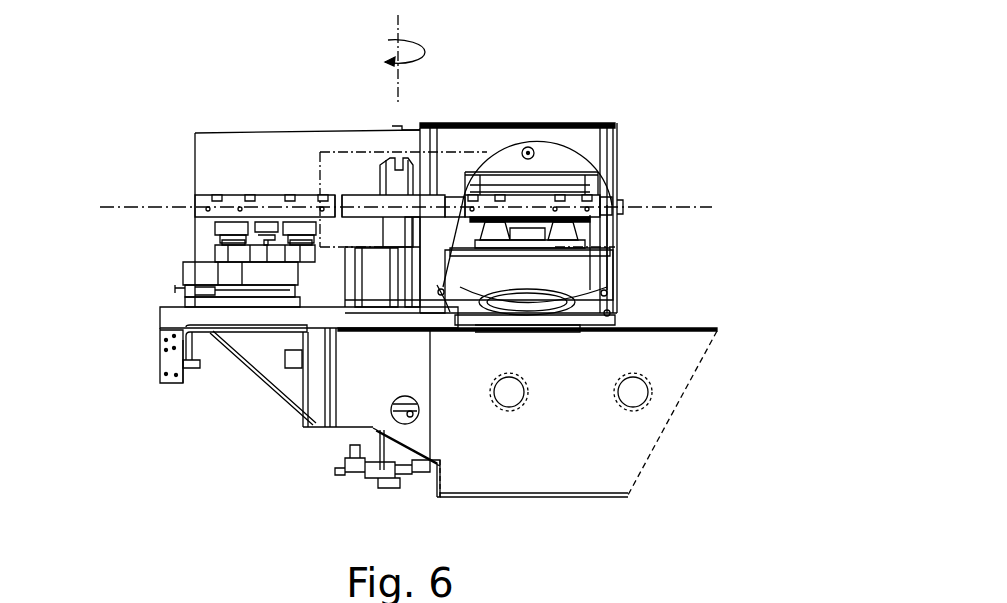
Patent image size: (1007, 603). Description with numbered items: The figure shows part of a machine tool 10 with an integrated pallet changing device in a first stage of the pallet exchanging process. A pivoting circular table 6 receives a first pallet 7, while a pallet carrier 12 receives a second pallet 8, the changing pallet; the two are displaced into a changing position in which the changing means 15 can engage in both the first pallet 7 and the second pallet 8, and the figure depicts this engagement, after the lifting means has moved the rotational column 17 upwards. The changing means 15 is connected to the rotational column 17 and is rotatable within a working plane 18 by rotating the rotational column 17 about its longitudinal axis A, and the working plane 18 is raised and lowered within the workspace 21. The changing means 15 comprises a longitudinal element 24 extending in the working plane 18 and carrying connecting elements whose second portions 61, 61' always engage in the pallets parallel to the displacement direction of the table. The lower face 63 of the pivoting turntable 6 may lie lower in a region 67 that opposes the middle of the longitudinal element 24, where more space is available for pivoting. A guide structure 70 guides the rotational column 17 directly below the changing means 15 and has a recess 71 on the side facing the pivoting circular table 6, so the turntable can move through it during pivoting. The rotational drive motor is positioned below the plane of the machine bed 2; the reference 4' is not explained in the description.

The machine bed 2 is at (670, 373).
The valve unit 4' is at (340, 458).
The pivoting circular table 6 is at (590, 263).
The first pallet 7 is at (545, 196).
The second pallet 8 is at (267, 193).
The machine tool 10 is at (690, 85).
The pallet carrier 12 is at (227, 252).
The changing means 15 is at (433, 180).
The rotational column 17 is at (293, 310).
The working plane 18 is at (700, 207).
The workspace 21 is at (332, 150).
The longitudinal element 24 is at (372, 203).
The second portion of the first connecting element 61 is at (186, 334).
The second portion of the second connecting element 61' is at (680, 283).
The lower face of the pivoting turntable 63 is at (587, 330).
The region of the lower face 67 is at (523, 337).
The guide structure 70 is at (375, 287).
The recess 71 is at (441, 296).
The longitudinal axis A is at (410, 60).